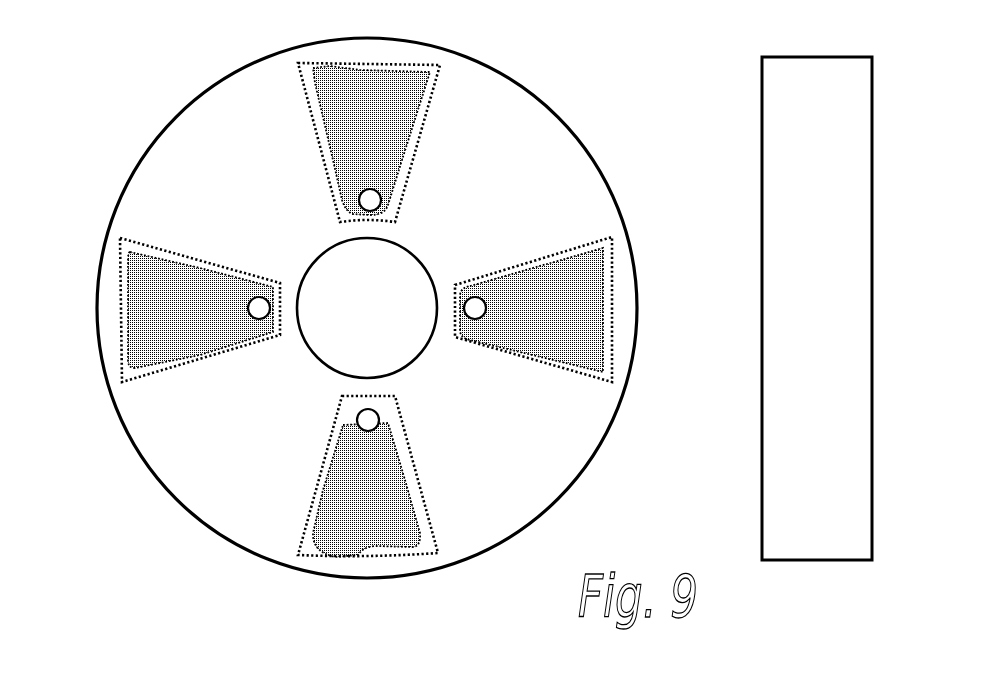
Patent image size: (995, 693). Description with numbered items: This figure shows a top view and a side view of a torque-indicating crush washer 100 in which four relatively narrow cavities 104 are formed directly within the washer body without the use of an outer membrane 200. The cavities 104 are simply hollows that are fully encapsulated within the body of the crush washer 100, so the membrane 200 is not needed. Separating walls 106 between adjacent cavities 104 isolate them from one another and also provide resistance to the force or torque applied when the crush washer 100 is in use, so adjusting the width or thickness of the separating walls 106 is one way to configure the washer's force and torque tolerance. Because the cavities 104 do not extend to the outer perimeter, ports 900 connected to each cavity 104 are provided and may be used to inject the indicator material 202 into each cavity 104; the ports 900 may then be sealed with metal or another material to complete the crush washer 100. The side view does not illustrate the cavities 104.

The torque-indicating crush washer 100 is at (799, 474).
The membrane 200 is at (173, 497).
The cavities 104 is at (306, 110).
The indicator material 202 is at (382, 114).
The separating walls 106 is at (481, 179).
The ports 900 is at (247, 307).